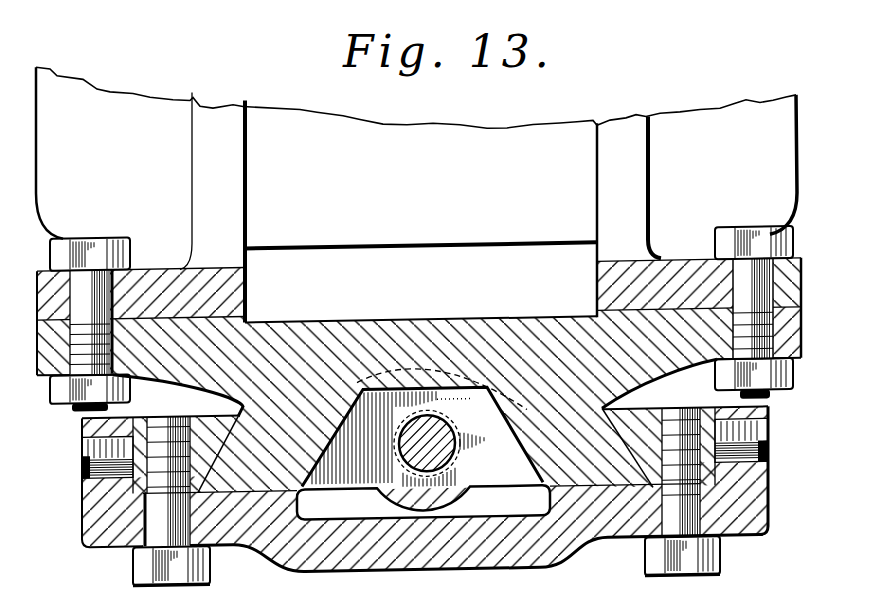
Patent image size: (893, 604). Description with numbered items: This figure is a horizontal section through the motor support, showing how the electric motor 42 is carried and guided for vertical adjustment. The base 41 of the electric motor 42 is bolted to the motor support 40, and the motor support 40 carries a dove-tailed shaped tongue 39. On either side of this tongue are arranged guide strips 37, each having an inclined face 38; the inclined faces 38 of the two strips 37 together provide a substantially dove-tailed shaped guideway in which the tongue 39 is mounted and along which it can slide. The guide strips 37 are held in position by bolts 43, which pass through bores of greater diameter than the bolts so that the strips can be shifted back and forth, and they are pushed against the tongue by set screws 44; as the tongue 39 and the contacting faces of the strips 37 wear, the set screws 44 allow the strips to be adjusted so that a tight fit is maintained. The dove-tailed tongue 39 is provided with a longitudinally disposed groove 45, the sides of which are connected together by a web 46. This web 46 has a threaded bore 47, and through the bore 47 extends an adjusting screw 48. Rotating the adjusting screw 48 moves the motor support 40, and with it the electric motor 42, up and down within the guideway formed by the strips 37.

The strips 37 is at (640, 426).
The inclined faces 38 is at (232, 451).
The dove-tailed shaped tongue 39 is at (588, 456).
The motor support 40 is at (419, 316).
The base 41 is at (660, 262).
The electric motor 42 is at (421, 208).
The bolts 43 is at (722, 568).
The set screws 44 is at (768, 419).
The longitudinally disposed groove 45 is at (500, 406).
The web 46 is at (447, 443).
The threaded bore 47 is at (405, 472).
The adjusting screw 48 is at (453, 478).